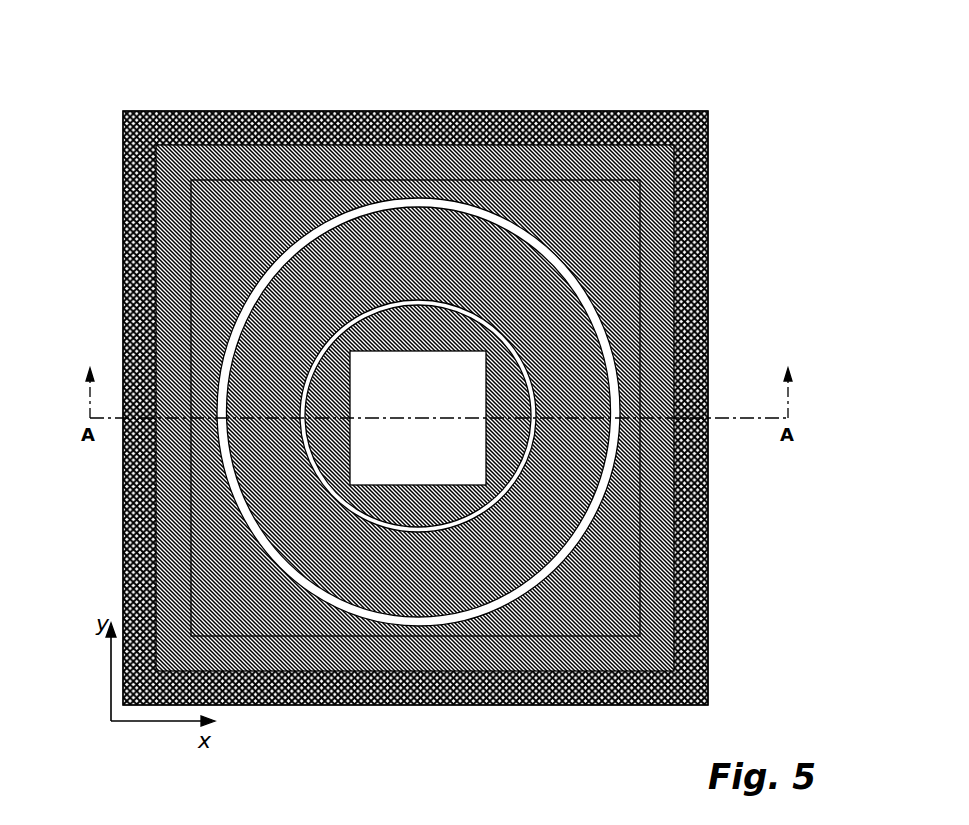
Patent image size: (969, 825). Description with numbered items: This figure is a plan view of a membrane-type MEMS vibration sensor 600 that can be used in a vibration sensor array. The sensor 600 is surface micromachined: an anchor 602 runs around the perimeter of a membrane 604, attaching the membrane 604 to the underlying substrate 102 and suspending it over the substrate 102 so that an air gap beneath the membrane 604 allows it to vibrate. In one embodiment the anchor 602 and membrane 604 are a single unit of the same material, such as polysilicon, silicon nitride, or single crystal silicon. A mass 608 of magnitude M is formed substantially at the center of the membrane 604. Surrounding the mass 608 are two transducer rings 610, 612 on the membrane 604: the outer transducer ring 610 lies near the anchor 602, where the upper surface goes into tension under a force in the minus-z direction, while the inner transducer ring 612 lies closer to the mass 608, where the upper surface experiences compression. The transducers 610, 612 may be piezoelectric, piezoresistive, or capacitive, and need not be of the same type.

The MEMS vibration sensor 600 is at (727, 66).
The anchor 602 is at (445, 646).
The membrane 604 is at (582, 580).
The mass 608 is at (418, 418).
The transducer ring 610 is at (539, 229).
The transducer ring 612 is at (353, 290).
The substrate 102 is at (415, 408).